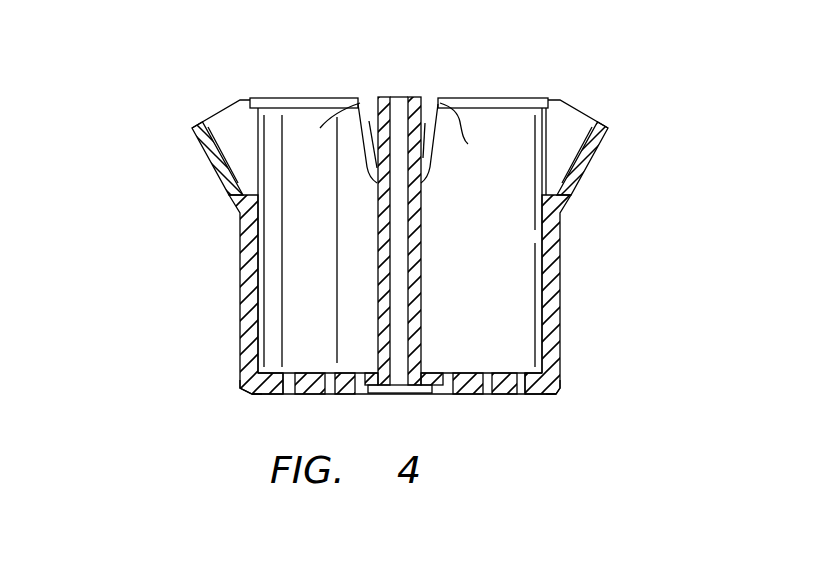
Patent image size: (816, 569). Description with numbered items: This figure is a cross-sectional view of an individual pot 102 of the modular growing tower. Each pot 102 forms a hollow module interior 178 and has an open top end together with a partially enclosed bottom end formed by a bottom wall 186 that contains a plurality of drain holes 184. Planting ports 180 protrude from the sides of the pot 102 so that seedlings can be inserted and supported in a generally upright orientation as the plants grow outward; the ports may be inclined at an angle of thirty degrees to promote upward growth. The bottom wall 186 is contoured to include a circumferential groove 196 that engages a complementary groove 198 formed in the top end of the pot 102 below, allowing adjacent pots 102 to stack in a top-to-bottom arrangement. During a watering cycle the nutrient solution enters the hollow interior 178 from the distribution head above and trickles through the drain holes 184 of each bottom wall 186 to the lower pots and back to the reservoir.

The pot 102 is at (212, 255).
The hollow module interior 178 is at (438, 102).
The planting port 180 is at (222, 112).
The drain holes 184 is at (354, 394).
The bottom wall 186 is at (256, 400).
The circumferential groove 196 is at (253, 393).
The complementary groove 198 is at (251, 100).